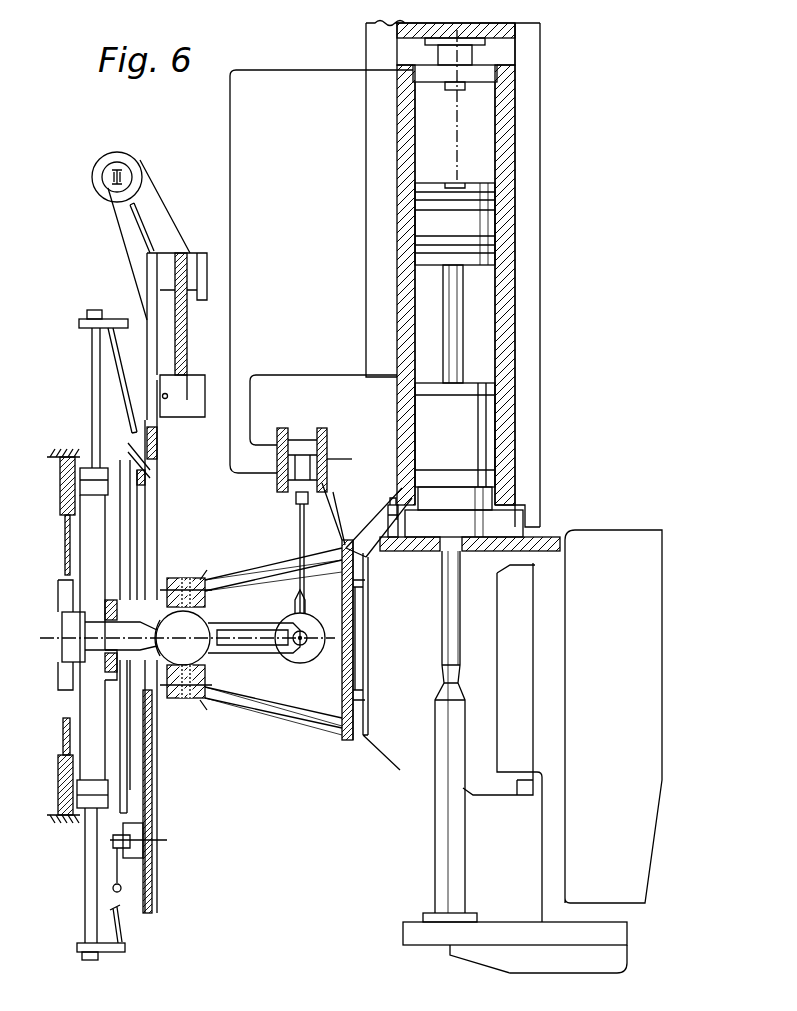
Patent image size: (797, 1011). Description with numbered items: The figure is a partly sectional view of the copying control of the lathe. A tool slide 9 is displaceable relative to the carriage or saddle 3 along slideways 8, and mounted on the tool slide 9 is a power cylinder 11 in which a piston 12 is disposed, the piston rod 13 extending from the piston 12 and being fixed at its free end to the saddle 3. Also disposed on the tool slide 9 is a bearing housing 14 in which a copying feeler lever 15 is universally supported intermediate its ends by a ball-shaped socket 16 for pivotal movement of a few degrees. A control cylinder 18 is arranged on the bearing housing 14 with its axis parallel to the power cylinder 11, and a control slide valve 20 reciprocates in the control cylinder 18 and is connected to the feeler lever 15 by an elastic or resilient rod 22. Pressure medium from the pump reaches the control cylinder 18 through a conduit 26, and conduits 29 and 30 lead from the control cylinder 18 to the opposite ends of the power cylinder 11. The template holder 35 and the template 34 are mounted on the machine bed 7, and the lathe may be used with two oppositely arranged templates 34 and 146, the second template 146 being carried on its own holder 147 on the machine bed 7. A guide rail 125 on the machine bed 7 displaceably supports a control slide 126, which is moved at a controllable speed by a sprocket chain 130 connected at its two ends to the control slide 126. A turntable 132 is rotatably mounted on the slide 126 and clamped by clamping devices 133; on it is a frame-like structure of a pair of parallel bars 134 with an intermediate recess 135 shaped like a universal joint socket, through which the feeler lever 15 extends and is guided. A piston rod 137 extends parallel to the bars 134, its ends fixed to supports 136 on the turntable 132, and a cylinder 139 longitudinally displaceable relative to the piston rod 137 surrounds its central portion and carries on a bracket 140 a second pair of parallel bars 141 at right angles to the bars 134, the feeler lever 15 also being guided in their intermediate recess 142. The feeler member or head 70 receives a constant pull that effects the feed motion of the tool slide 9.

The carriage or saddle 3 is at (400, 935).
The machine bed 7 is at (48, 458).
The slideways 8 is at (525, 718).
The tool slide 9 is at (398, 757).
The power cylinder 11 is at (515, 291).
The piston 12 is at (477, 222).
The piston rod 13 is at (430, 845).
The bearing housing 14 is at (290, 716).
The copying feeler lever 15 is at (250, 660).
The ball-shaped socket 16 is at (215, 595).
The control cylinder 18 is at (320, 426).
The control slide valve 20 is at (302, 480).
The resilient member or rod 22 is at (297, 525).
The conduit 26 is at (330, 458).
The conduit 29 is at (296, 378).
The conduit 30 is at (322, 78).
The template 34 is at (66, 540).
The template holder 35 is at (60, 492).
The feeler member or head 70 is at (58, 605).
The guide rail 125 is at (188, 358).
The control slide 126 is at (160, 455).
The sprocket chain 130 is at (125, 165).
The turntable 132 is at (148, 778).
The clamping devices 133 is at (140, 858).
The parallel bars 134 is at (148, 522).
The intermediate recess 135 is at (157, 670).
The supports 136 is at (112, 374).
The piston rod 137 is at (90, 406).
The cylinder 139 is at (80, 712).
The bracket 140 is at (110, 597).
The parallel bars 141 is at (103, 664).
The intermediate recess 142 is at (110, 625).
The template 146 is at (63, 745).
The support block 147 is at (58, 778).